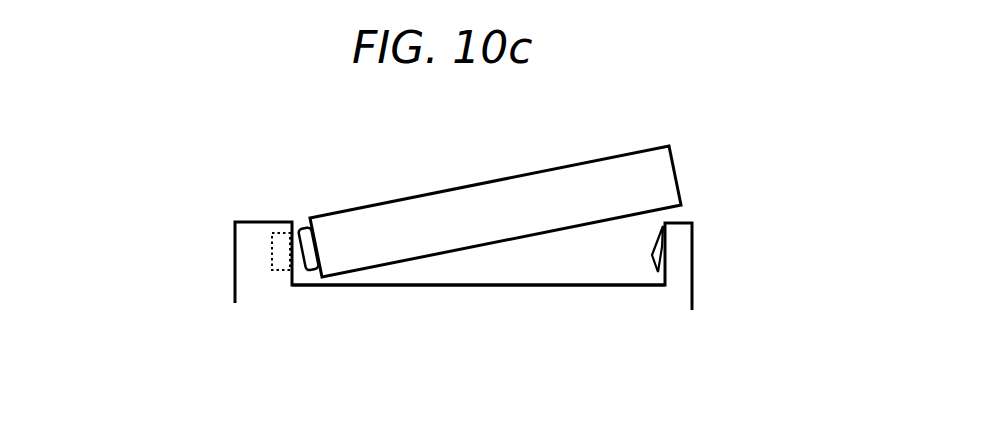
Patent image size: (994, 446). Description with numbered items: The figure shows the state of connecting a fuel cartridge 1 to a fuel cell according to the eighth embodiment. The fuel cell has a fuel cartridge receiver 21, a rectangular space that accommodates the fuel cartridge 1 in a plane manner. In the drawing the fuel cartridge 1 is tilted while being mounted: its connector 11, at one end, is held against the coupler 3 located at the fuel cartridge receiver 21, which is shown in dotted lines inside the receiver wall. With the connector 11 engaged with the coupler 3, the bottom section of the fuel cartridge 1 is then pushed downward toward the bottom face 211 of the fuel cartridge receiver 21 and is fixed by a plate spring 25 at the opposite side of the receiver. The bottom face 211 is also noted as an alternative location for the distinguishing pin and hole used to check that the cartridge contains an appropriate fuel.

The fuel cartridge 1 is at (530, 167).
The connector 11 is at (305, 228).
The coupler 3 is at (280, 252).
The fuel cartridge receiver 21 is at (380, 308).
The bottom face 211 is at (500, 287).
The plate spring 25 is at (653, 275).